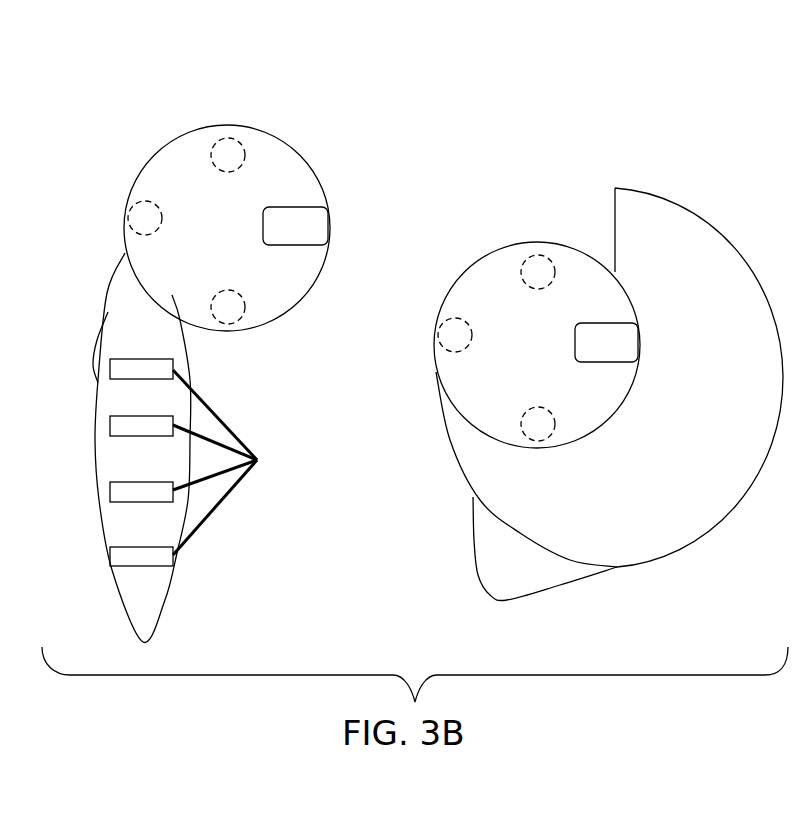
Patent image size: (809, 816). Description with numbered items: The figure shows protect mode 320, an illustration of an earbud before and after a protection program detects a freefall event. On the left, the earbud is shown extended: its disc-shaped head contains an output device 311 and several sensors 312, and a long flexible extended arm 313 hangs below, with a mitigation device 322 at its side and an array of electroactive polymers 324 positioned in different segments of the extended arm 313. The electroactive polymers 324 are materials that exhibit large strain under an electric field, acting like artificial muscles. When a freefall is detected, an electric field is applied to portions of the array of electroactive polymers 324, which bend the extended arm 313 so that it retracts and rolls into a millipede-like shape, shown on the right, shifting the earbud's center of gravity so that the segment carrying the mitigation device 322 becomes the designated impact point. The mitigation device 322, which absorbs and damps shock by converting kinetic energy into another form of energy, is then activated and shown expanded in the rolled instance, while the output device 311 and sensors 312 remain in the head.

The protect mode 320 is at (552, 100).
The output device 311 is at (307, 207).
The sensor(s) 312 is at (216, 167).
The extended arm 313 is at (108, 284).
The mitigation device 322 is at (92, 333).
The electroactive polymers (EAPs) 324 is at (257, 460).